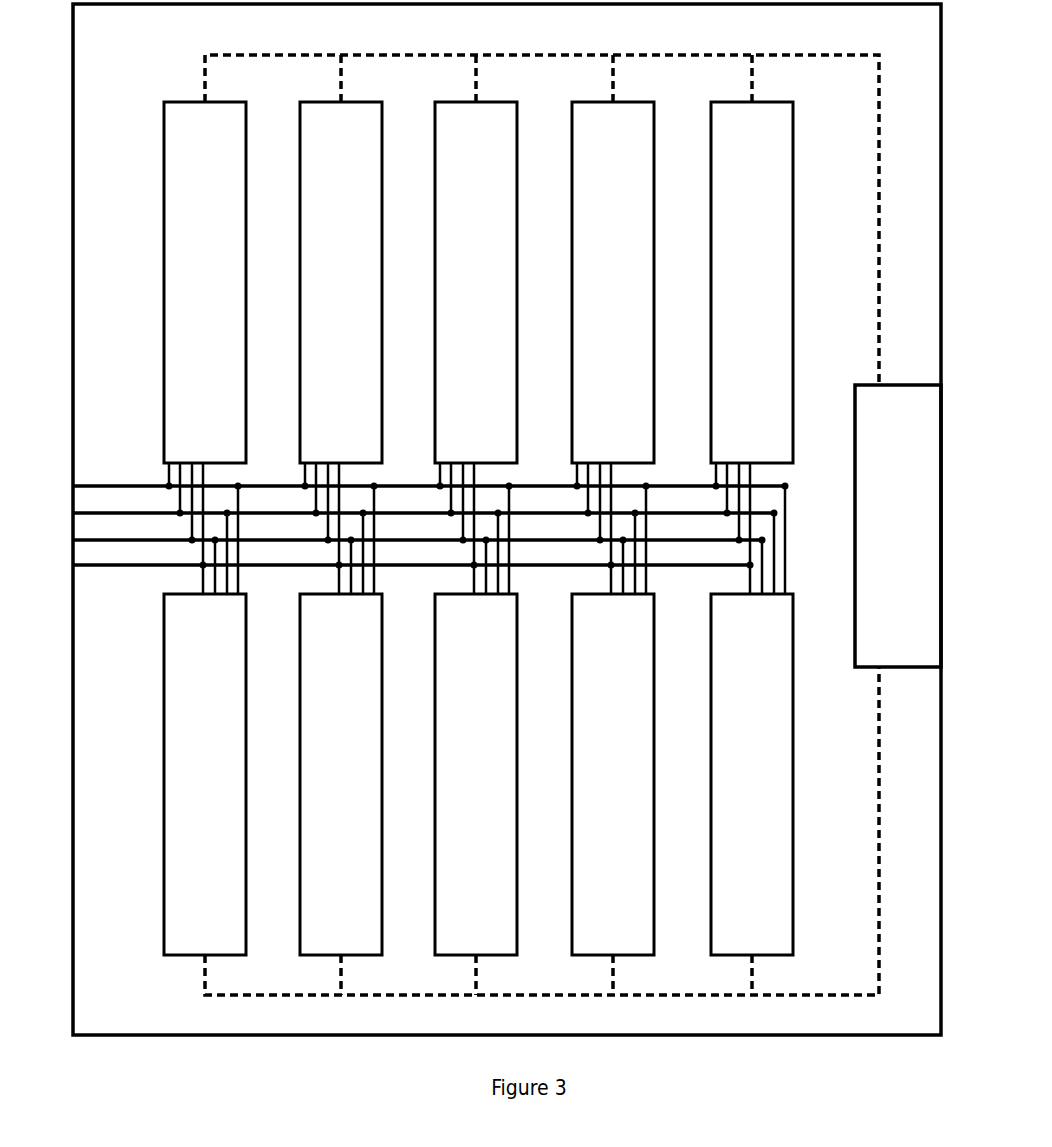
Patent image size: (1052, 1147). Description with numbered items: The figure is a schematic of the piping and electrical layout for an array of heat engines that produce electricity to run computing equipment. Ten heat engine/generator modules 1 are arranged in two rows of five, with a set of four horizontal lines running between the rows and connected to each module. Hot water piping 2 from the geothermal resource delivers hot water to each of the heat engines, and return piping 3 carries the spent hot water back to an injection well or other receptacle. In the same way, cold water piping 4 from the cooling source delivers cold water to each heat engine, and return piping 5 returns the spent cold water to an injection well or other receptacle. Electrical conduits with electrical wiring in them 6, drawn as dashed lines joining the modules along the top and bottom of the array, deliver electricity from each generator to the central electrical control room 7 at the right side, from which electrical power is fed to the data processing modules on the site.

The heat engine/generator module 1 is at (478, 528).
The hot water piping 2 is at (133, 482).
The return piping 3 is at (72, 510).
The cold water piping 4 is at (72, 543).
The return piping 5 is at (130, 570).
The electrical conduits 6 is at (877, 253).
The central electrical control room 7 is at (898, 526).